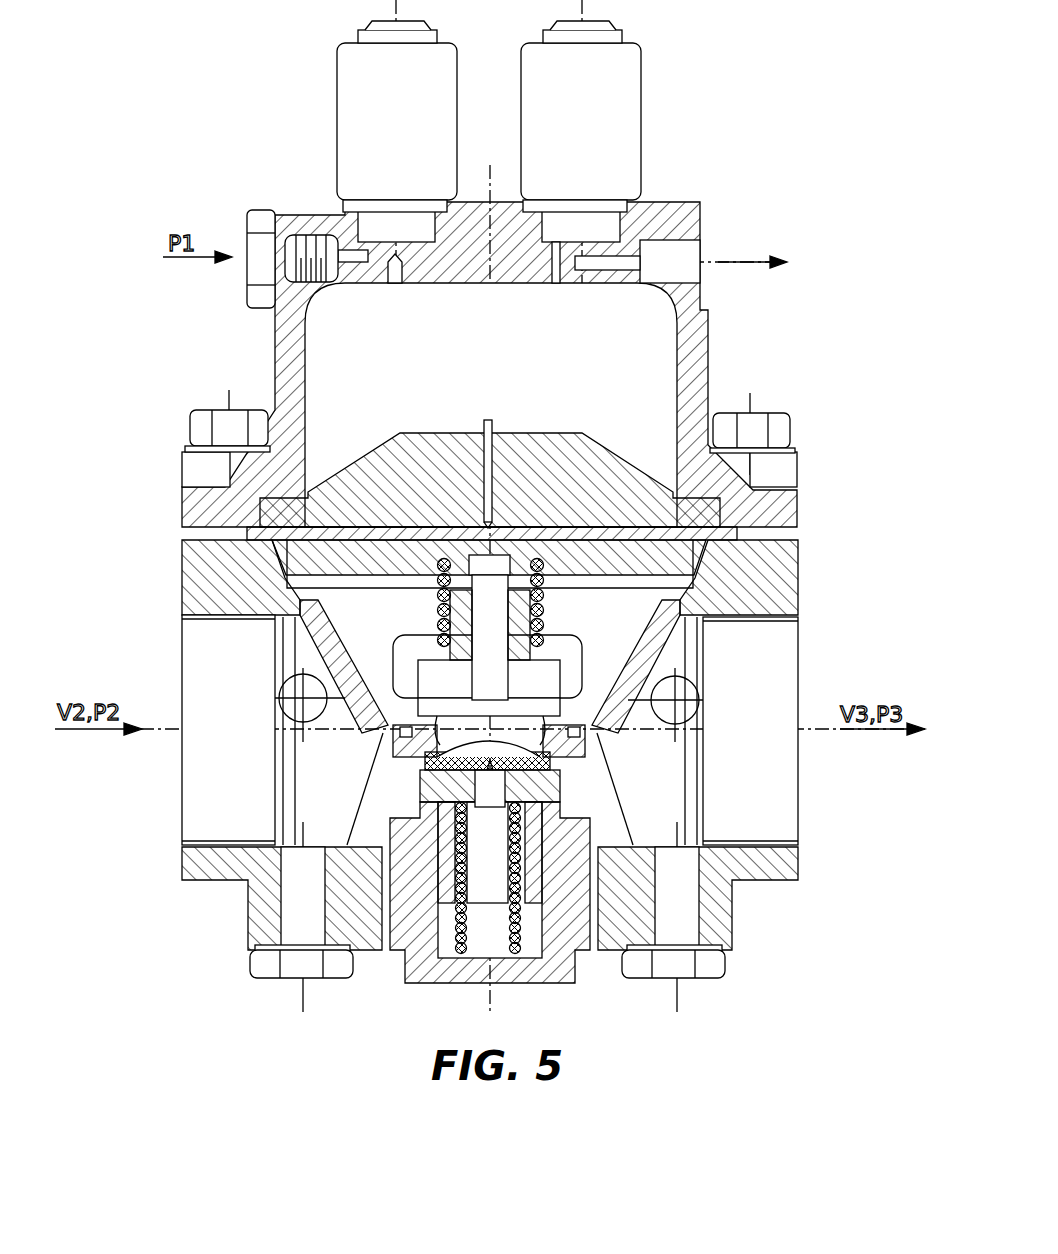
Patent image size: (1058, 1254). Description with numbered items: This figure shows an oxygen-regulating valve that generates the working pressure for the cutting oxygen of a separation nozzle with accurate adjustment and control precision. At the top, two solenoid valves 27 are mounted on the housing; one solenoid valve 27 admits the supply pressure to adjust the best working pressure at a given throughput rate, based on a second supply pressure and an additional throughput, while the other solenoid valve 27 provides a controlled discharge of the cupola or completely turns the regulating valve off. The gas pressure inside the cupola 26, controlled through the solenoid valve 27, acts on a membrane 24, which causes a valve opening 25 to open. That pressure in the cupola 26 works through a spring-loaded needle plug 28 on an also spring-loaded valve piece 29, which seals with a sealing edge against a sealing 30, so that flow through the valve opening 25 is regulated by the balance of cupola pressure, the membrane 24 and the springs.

The membrane 24 is at (737, 562).
The valve opening 25 is at (530, 727).
The cupola 26 is at (658, 383).
The solenoid valve 27 is at (352, 115).
The spring-loaded needle plug 28 is at (482, 648).
The spring-loaded valve piece 29 is at (540, 793).
The sealing 30 is at (397, 743).